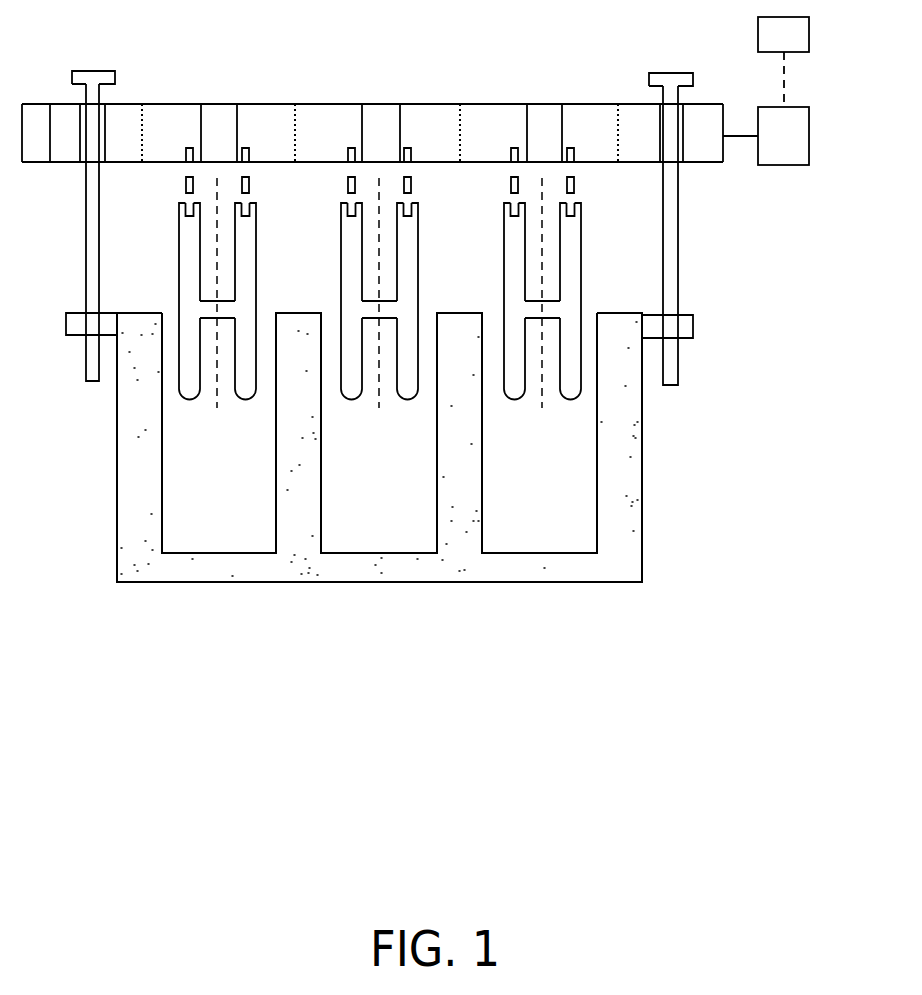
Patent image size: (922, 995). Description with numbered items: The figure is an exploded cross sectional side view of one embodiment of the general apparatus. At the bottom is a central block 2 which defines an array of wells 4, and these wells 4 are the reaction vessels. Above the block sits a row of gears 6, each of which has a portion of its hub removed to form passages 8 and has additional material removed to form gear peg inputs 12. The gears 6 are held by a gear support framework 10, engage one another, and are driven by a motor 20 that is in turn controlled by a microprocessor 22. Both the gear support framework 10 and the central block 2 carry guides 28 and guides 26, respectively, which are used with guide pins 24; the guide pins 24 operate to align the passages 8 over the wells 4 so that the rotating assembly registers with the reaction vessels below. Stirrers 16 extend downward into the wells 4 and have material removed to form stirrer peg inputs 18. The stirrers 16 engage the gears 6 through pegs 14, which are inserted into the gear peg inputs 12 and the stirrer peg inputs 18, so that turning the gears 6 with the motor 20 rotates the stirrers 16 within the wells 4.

The central block 2 is at (635, 457).
The wells 4 is at (583, 535).
The gears 6 is at (167, 107).
The passages 8 is at (217, 107).
The gear support framework 10 is at (67, 104).
The gear peg inputs 12 is at (355, 152).
The pegs 14 is at (187, 182).
The stirrers 16 is at (252, 232).
The stirrer peg inputs 18 is at (250, 203).
The motor 20 is at (803, 140).
The microprocessor 22 is at (807, 38).
The guide pins 24 is at (112, 80).
The guides 26 is at (72, 322).
The guides 28 is at (104, 111).